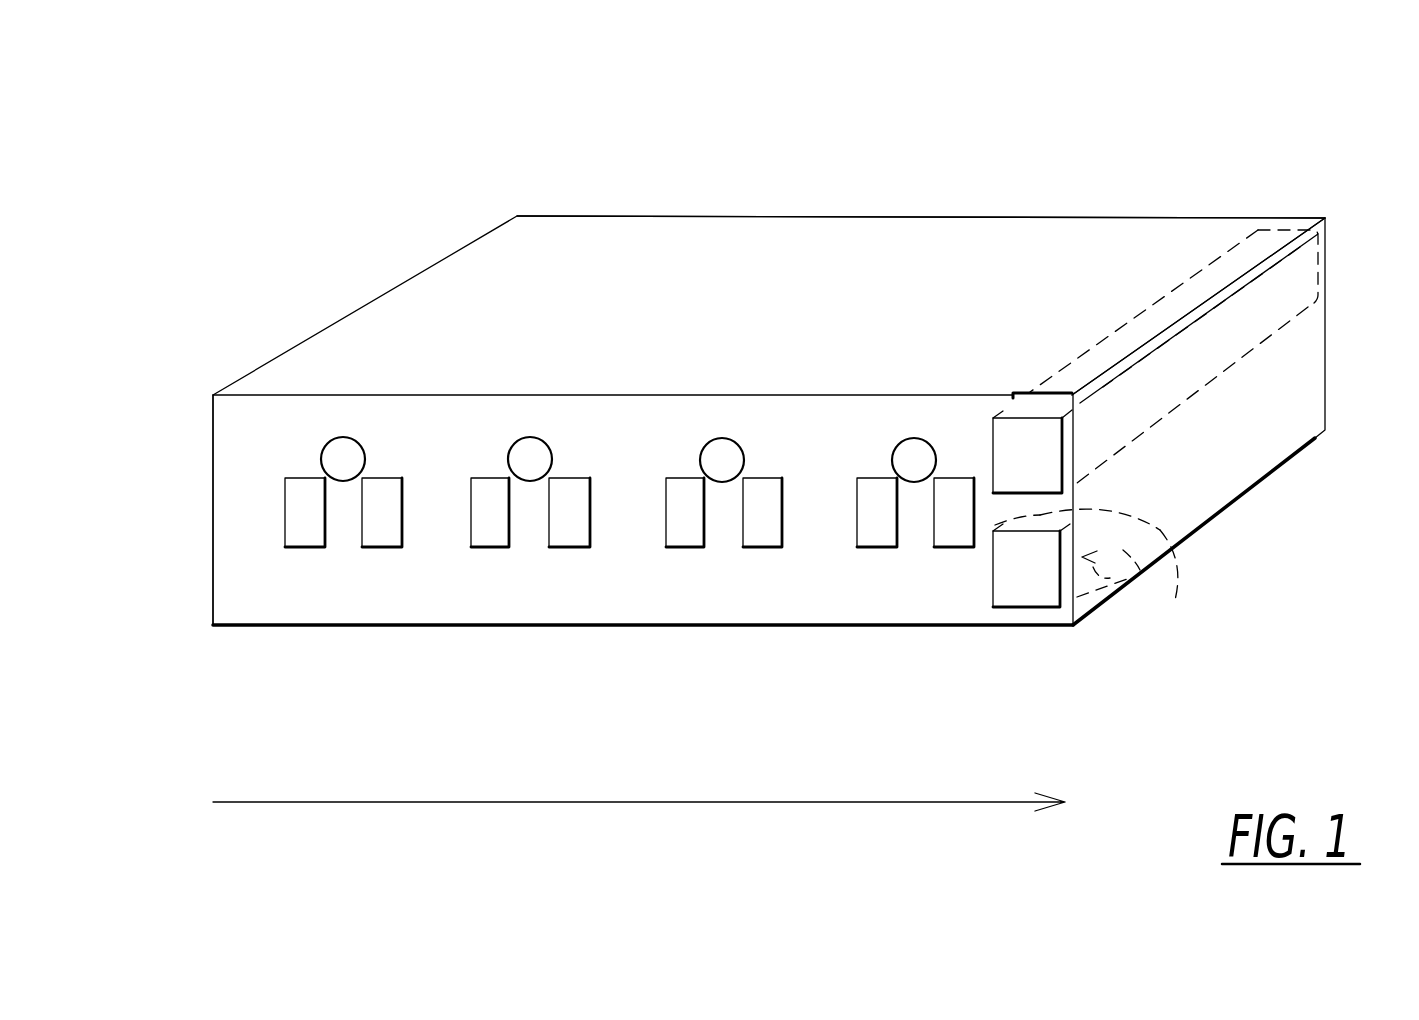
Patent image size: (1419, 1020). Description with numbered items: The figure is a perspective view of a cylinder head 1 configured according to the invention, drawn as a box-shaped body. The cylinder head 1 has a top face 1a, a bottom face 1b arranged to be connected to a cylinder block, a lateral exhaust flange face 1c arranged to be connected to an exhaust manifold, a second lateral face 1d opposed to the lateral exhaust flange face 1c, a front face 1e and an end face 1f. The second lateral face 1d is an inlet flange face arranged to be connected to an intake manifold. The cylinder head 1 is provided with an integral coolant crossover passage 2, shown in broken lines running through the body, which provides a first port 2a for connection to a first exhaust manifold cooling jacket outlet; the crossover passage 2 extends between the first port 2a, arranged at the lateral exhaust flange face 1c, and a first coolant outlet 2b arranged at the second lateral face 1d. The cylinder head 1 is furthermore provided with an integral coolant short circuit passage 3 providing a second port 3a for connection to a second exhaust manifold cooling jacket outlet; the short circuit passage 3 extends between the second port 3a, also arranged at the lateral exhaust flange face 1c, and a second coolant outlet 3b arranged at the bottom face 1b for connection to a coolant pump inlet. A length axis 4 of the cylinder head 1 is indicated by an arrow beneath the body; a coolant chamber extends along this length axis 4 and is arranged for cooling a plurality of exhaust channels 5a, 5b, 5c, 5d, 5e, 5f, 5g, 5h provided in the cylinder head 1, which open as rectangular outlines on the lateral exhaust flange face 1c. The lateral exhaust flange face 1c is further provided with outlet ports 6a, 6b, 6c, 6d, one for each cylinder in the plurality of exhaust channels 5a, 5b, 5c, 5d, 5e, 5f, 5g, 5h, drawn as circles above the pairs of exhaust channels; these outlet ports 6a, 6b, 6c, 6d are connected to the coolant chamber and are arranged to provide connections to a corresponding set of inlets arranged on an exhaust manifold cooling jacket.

The cylinder head 1 is at (759, 410).
The top face 1a is at (843, 268).
The bottom face 1b is at (253, 628).
The lateral exhaust flange face 1c is at (644, 432).
The second lateral face 1d is at (973, 283).
The front face 1e is at (1260, 413).
The end face 1f is at (213, 492).
The integral coolant crossover passage 2 is at (1194, 293).
The first port 2a is at (1007, 450).
The first coolant outlet 2b is at (1290, 228).
The integral coolant short circuit passage 3 is at (1144, 620).
The second port 3a is at (1025, 597).
The second coolant outlet 3b is at (1175, 600).
The length axis 4 is at (970, 802).
The exhaust channel 5a is at (310, 537).
The exhaust channel 5b is at (382, 532).
The exhaust channel 5c is at (490, 538).
The exhaust channel 5d is at (577, 538).
The exhaust channel 5e is at (685, 538).
The exhaust channel 5f is at (768, 538).
The exhaust channel 5g is at (880, 538).
The exhaust channel 5h is at (960, 538).
The outlet port 6a is at (347, 468).
The outlet port 6b is at (531, 468).
The outlet port 6c is at (724, 468).
The outlet port 6d is at (915, 468).